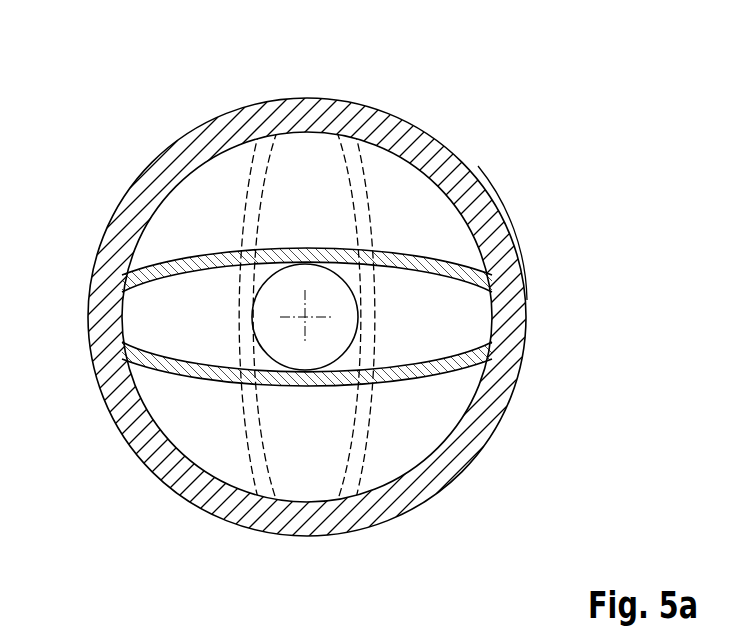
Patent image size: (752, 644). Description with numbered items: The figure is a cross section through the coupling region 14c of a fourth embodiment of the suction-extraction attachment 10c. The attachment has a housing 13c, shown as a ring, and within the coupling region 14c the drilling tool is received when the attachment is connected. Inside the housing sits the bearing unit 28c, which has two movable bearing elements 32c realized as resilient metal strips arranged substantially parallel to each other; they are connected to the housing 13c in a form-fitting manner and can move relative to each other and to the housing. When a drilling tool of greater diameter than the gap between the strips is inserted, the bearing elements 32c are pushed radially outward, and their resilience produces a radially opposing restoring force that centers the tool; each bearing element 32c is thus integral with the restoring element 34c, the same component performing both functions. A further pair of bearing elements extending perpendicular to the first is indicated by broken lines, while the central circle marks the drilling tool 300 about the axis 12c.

The suction-extraction attachment 10c is at (137, 102).
The housing 13c is at (396, 125).
The coupling region 14c is at (445, 398).
The bearing unit 28c is at (525, 267).
The movable bearing element 32c is at (462, 282).
The restoring element 34c is at (466, 302).
The circular opening 300 is at (356, 318).
The center axis 12c is at (304, 320).